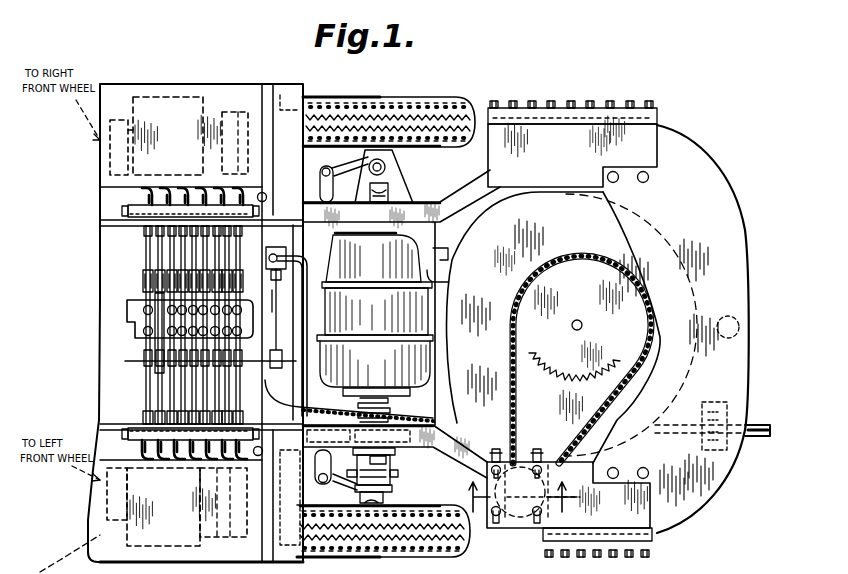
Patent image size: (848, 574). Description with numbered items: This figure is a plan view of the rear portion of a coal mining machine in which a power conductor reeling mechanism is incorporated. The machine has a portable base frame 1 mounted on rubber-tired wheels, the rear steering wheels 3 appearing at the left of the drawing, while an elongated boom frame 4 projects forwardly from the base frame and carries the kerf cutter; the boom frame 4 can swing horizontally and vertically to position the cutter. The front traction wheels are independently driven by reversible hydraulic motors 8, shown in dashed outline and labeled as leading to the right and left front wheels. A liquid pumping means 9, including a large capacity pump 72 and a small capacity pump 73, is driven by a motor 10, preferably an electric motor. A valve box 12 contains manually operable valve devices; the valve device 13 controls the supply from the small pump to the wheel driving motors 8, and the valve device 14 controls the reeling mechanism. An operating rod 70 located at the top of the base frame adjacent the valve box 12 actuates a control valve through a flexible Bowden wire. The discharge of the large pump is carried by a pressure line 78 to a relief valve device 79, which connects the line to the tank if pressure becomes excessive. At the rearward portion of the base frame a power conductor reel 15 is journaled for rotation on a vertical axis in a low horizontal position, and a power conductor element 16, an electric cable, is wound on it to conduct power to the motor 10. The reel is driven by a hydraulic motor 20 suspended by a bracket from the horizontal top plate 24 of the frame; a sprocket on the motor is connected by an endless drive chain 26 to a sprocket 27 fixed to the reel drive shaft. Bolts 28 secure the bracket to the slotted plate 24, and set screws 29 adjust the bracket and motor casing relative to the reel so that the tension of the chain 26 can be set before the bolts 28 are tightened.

The portable base frame 1 is at (687, 133).
The rear steering wheels 3 is at (458, 98).
The boom frame 4 is at (523, 505).
The reversible hydraulic motors 8 is at (178, 115).
The liquid pumping means 9 is at (392, 480).
The motor 10 is at (398, 322).
The valve box 12 is at (131, 298).
The valve device 13 is at (170, 322).
The valve device 14 is at (216, 300).
The power conductor reel 15 is at (545, 206).
The power conductor element 16 is at (761, 428).
The hydraulic motor 20 is at (536, 526).
The horizontal top plate 24 is at (500, 518).
The endless drive chain 26 is at (512, 385).
The sprocket 27 is at (553, 272).
The bolts 28 is at (540, 520).
The set screws 29 is at (540, 448).
The operating rod 70 is at (253, 455).
The large capacity pump 72 is at (398, 417).
The small capacity pump 73 is at (388, 468).
The pressure line 78 is at (302, 262).
The relief valve device 79 is at (272, 240).